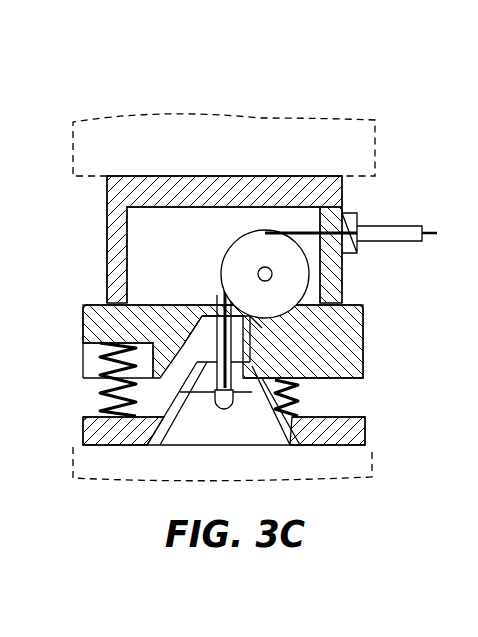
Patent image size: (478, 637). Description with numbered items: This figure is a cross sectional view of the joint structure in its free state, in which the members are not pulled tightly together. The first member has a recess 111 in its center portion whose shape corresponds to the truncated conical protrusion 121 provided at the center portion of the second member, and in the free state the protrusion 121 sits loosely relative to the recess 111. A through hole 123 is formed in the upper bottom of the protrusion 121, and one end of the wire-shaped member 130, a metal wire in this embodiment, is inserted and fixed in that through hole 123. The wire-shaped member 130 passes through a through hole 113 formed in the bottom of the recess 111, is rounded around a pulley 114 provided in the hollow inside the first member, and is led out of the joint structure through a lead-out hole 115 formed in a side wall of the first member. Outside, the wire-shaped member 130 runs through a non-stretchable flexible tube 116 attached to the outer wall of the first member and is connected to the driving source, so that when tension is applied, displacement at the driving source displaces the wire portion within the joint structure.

The recess 111 is at (197, 336).
The through hole 113 is at (223, 292).
The pulley 114 is at (264, 231).
The lead-out hole 115 is at (323, 228).
The flexible tube 116 is at (392, 230).
The protrusion 121 is at (172, 398).
The through hole 123 is at (250, 362).
The wire-shaped member 130 is at (207, 333).